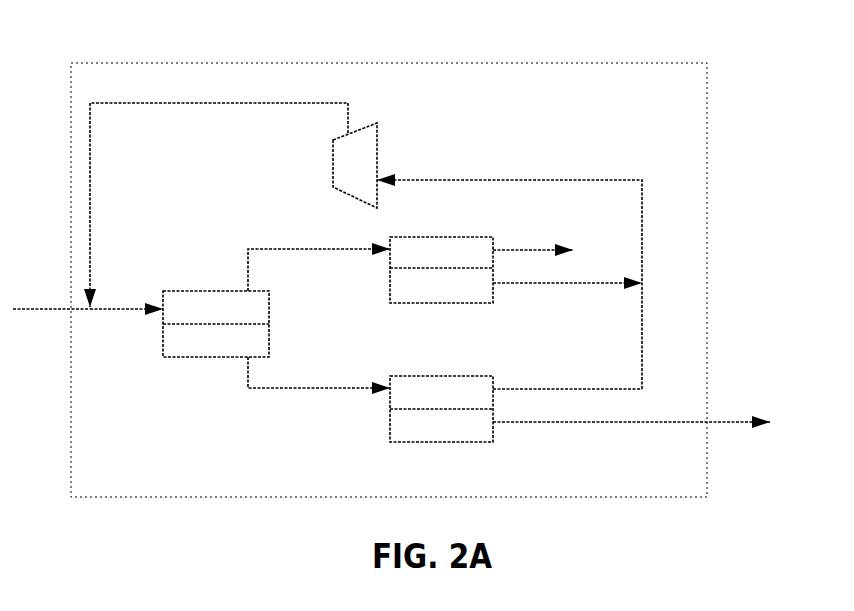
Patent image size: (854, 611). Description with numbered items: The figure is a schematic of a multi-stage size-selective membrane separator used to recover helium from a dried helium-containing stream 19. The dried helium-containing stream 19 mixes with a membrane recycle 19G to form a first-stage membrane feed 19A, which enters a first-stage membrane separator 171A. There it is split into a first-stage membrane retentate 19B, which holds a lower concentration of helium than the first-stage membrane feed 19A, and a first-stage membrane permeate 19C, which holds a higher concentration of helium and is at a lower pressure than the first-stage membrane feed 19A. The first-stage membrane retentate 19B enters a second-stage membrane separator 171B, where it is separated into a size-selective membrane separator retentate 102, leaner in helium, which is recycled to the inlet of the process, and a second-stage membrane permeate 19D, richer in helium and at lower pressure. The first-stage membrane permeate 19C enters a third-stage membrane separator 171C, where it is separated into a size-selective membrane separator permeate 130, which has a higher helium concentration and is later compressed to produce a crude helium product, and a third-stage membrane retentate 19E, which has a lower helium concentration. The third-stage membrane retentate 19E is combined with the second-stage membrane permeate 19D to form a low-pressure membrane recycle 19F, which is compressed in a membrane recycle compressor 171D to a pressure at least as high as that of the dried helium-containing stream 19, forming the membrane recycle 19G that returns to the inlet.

The dried helium-containing stream 19 is at (51, 299).
The first-stage membrane feed 19A is at (126, 299).
The first-stage membrane retentate 19B is at (319, 261).
The first-stage membrane permeate 19C is at (319, 372).
The second-stage membrane permeate 19D is at (567, 273).
The third-stage membrane retentate 19E is at (567, 379).
The low-pressure membrane recycle 19F is at (509, 275).
The membrane recycle 19G is at (219, 205).
The size-selective membrane separator retentate 102 is at (533, 239).
The size-selective membrane separator permeate 130 is at (631, 411).
The first-stage membrane separator 171A is at (216, 324).
The second-stage membrane separator 171B is at (441, 270).
The third-stage membrane separator 171C is at (441, 409).
The membrane recycle compressor 171D is at (355, 165).